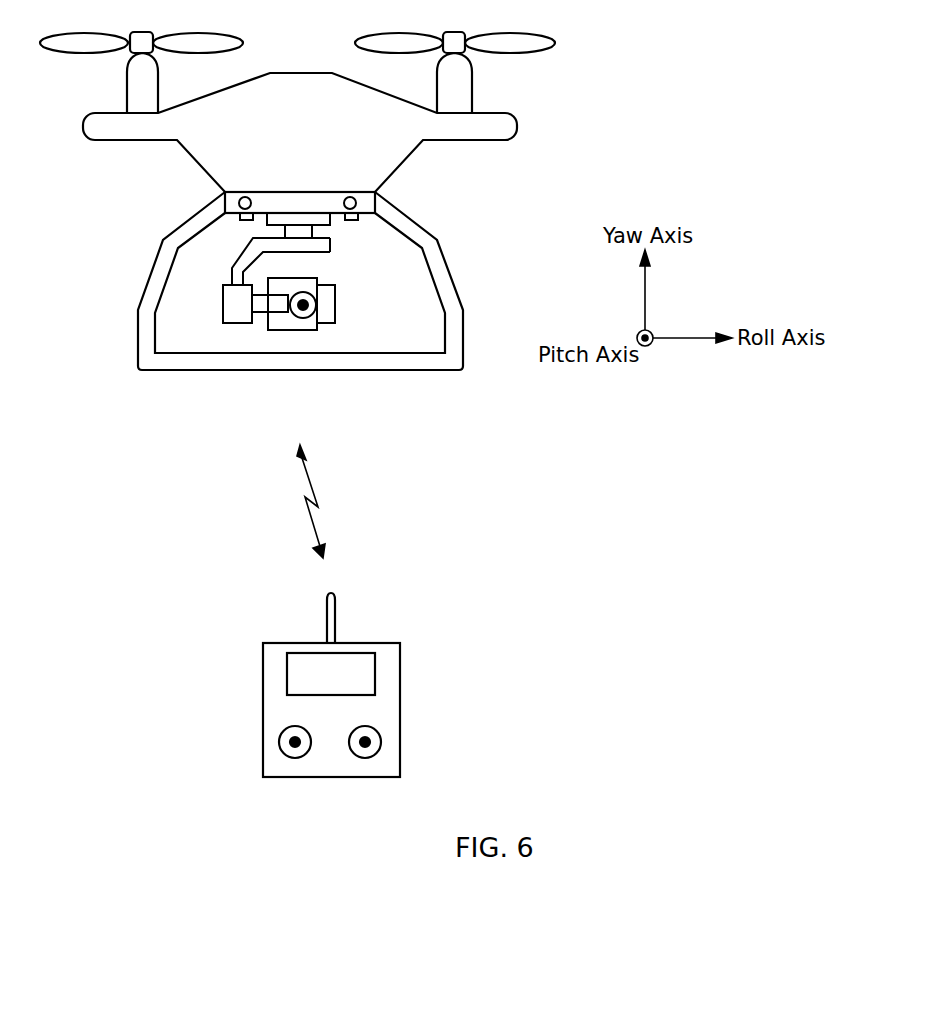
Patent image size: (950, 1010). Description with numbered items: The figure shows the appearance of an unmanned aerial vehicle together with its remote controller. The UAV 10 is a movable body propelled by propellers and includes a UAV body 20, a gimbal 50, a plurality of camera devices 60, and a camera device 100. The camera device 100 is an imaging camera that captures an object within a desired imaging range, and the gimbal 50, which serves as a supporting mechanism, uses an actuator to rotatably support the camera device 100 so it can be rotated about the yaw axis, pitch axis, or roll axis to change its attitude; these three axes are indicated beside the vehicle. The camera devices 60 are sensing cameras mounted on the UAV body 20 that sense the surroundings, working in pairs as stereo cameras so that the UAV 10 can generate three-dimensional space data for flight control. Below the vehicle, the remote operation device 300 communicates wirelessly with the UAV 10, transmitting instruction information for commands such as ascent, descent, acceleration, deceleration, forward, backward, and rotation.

The unmanned aerial vehicle 10 is at (592, 108).
The UAV body 20 is at (298, 80).
The gimbal 50 is at (237, 258).
The camera devices 60 is at (240, 222).
The camera device 100 is at (293, 322).
The remote operation device 300 is at (400, 712).